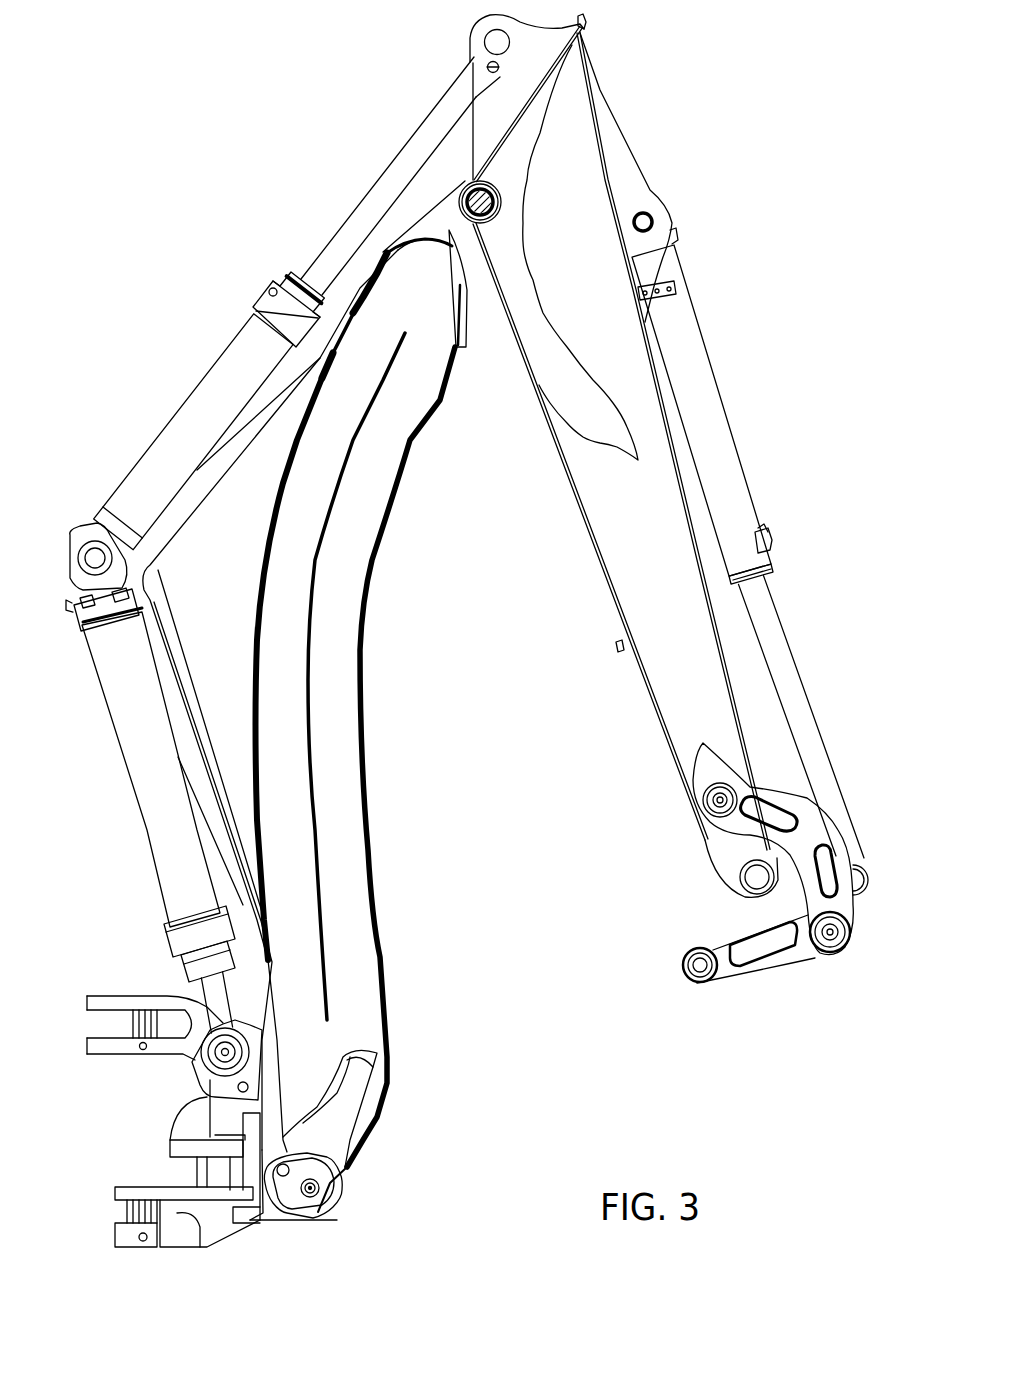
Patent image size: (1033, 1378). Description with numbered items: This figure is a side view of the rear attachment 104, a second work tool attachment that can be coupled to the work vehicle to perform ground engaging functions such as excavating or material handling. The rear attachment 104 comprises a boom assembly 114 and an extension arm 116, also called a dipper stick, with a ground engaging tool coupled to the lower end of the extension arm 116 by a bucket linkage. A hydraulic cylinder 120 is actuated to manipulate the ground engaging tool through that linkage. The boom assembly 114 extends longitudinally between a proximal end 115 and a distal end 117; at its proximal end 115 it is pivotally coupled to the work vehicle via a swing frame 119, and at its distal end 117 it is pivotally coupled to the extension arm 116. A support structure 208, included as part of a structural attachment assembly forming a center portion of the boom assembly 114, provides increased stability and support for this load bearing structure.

The rear attachment 104 is at (232, 78).
The boom assembly 114 is at (405, 562).
The proximal end 115 is at (313, 1193).
The extension arm 116 is at (670, 122).
The distal end 117 is at (491, 228).
The swing frame 119 is at (230, 1100).
The hydraulic cylinder 120 is at (700, 413).
The support structure 208 is at (365, 678).